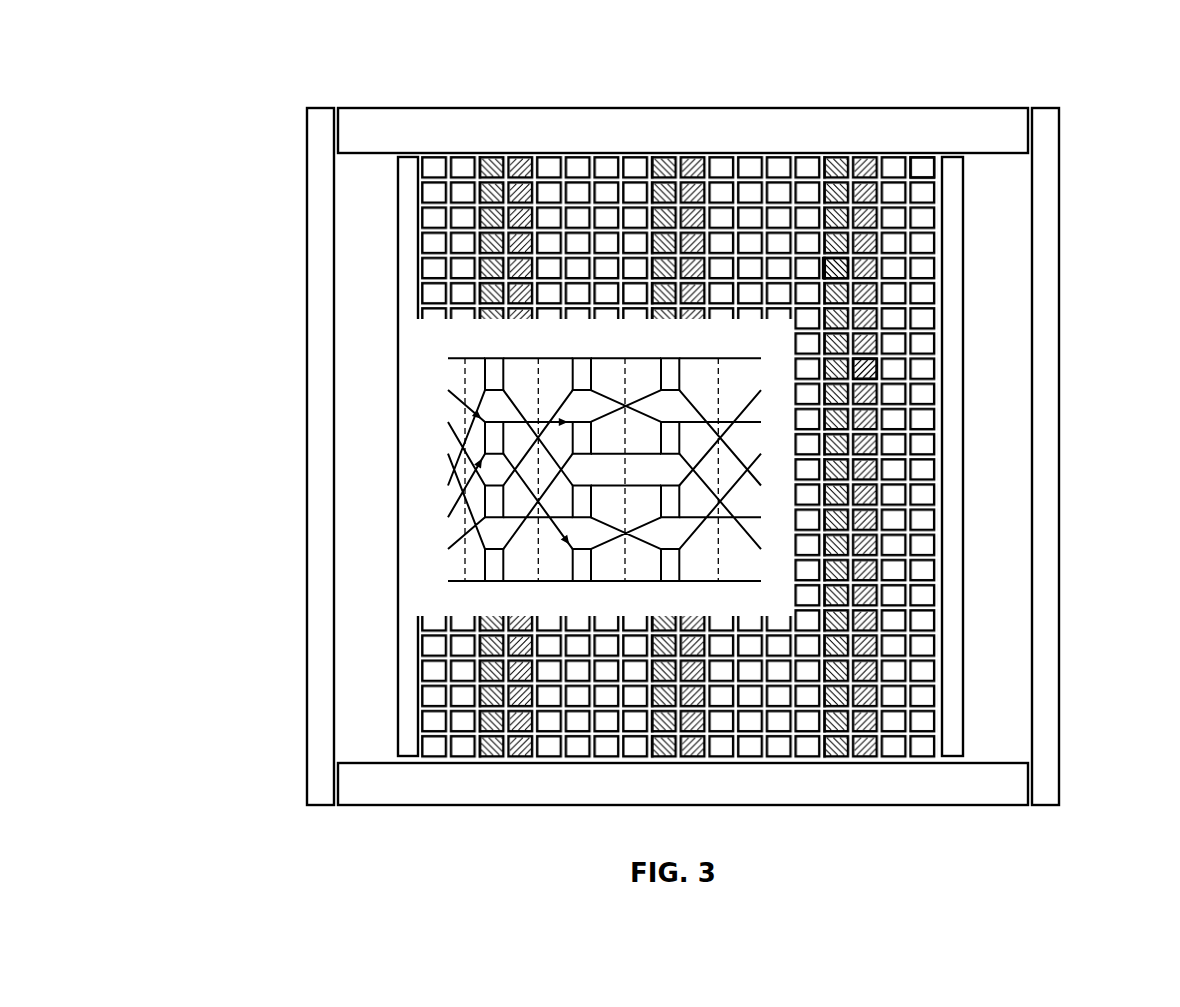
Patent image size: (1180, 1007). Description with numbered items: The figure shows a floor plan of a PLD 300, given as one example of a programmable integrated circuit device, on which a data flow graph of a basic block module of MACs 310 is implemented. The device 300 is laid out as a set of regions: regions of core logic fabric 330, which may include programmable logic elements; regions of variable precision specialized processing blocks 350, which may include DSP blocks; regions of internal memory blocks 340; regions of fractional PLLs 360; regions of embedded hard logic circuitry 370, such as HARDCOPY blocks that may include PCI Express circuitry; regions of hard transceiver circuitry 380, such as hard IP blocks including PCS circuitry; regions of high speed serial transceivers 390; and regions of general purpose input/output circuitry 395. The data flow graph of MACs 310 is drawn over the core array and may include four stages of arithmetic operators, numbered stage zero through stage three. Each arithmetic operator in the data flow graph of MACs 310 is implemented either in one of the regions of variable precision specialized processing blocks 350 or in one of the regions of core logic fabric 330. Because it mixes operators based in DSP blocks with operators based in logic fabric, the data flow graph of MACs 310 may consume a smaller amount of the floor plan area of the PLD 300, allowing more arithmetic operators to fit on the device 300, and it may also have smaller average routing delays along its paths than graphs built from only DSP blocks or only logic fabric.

The PLD 300 is at (249, 67).
The data flow graph of MACs 310 is at (430, 328).
The core logic fabric 330 is at (930, 172).
The internal memory blocks 340 is at (868, 364).
The variable precision specialized processing blocks 350 is at (843, 268).
The fractional PLLs 360 is at (950, 423).
The embedded hard logic circuitry 370 is at (985, 503).
The hard transceiver circuitry 380 is at (1047, 622).
The high speed serial transceivers 390 is at (1068, 785).
The general purpose input/output circuitry 395 is at (417, 122).